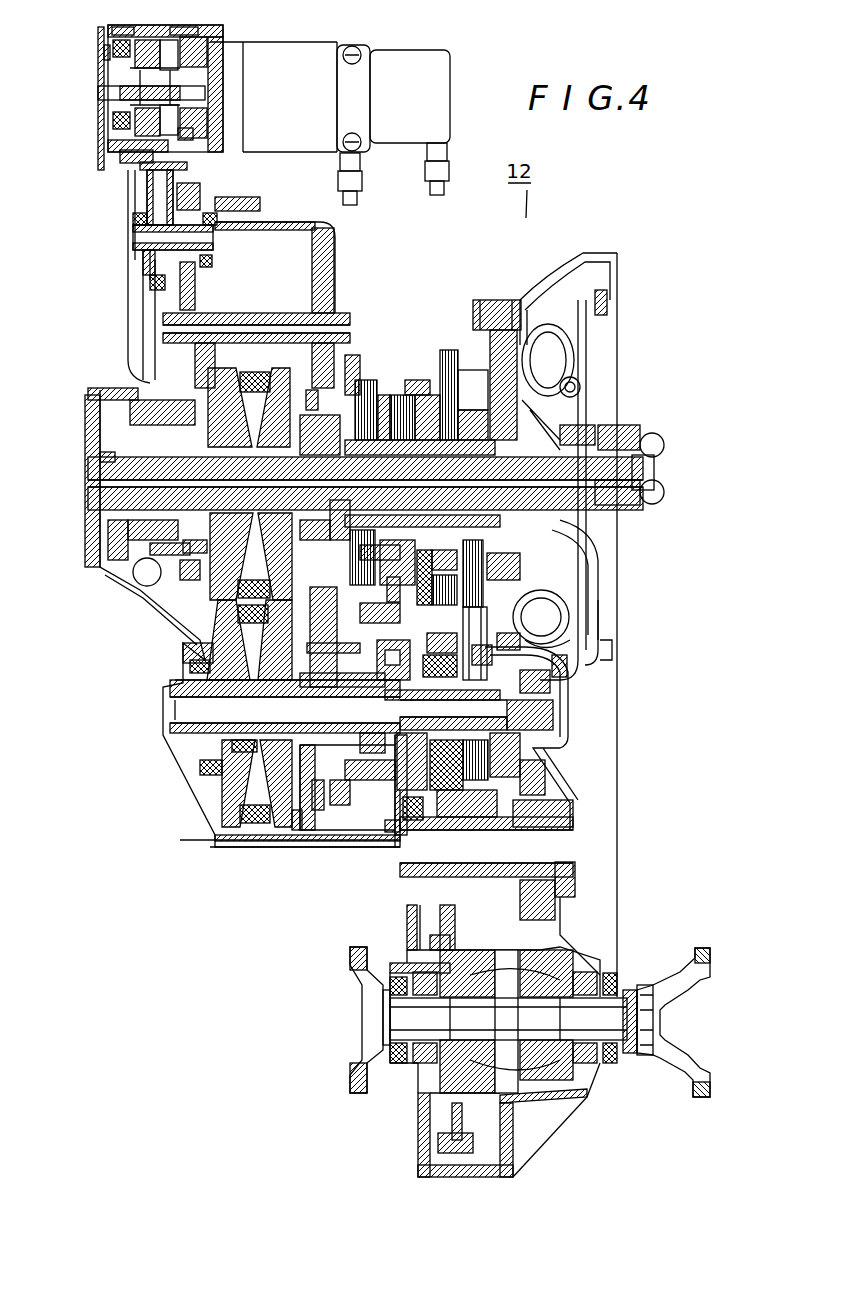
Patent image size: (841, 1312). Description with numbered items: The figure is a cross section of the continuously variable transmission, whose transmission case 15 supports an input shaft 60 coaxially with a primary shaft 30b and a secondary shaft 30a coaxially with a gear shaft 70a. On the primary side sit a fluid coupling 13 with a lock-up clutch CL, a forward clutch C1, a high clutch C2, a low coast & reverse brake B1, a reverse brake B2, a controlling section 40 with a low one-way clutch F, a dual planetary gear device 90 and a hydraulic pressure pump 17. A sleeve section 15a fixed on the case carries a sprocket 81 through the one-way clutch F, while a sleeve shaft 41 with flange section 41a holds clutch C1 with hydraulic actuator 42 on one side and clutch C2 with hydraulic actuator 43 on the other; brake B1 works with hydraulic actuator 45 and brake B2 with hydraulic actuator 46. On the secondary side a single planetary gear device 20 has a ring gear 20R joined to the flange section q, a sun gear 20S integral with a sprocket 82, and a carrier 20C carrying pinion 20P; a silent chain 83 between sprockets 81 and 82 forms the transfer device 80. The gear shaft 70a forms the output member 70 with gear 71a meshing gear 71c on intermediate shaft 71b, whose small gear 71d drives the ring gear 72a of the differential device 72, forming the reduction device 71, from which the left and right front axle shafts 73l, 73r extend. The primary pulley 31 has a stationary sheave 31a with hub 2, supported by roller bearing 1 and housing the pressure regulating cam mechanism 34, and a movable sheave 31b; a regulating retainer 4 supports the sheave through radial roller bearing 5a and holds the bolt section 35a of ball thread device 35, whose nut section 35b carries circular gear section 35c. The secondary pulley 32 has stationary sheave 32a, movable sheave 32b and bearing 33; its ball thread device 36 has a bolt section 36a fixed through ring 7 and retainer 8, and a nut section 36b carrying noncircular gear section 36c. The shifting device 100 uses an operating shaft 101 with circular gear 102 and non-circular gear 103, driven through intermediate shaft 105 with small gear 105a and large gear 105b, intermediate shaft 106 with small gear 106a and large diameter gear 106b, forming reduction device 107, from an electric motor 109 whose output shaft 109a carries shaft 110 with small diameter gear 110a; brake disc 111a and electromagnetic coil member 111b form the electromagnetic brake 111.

The roller bearing 1 is at (310, 395).
The cylinder-shaped hub 2 is at (310, 435).
The regulating retainer 4 is at (100, 430).
The radial roller bearing 5a is at (100, 458).
The ring 7 is at (360, 605).
The regulating retainer 8 is at (385, 645).
The fluid coupling 13 is at (550, 300).
The transmission case 15 is at (325, 862).
The sleeve section 15a is at (640, 500).
The hydraulic pressure pump 17 is at (570, 432).
The single planetary gear device 20 is at (487, 580).
The carrier 20C is at (397, 755).
The sun gear 20S is at (485, 800).
The ring gear 20R is at (486, 847).
The pinion 20P is at (518, 840).
The secondary shaft 30a is at (172, 702).
The primary shaft 30b is at (92, 480).
The primary pulley 31 is at (236, 380).
The stationary sheave 31a is at (300, 385).
The movable sheave 31b is at (195, 385).
The secondary pulley 32 is at (265, 828).
The stationary sheave 32a is at (238, 807).
The movable sheave 32b is at (300, 832).
The bearing 33 is at (242, 830).
The pressure regulating cam mechanism 34 is at (318, 528).
The ball thread device 35 is at (172, 556).
The bolt section 35a is at (118, 530).
The nut section 35b is at (100, 563).
The circular gear section 35c is at (195, 580).
The ball thread device 36 is at (340, 812).
The bolt section 36a is at (360, 643).
The nut section 36b is at (362, 790).
The noncircular gear section 36c is at (322, 805).
The controlling section 40 is at (480, 298).
The sleeve shaft 41 is at (337, 519).
The flange section 41a is at (415, 385).
The hydraulic actuator 42 is at (432, 605).
The hydraulic actuator 43 is at (598, 592).
The hydraulic actuator 45 is at (460, 605).
The hydraulic actuator 46 is at (352, 355).
The input shaft 60 is at (645, 448).
The output member 70 is at (572, 811).
The gear shaft 70a is at (550, 690).
The reduction device 71 is at (412, 921).
The gear 71a is at (560, 670).
The intermediate shaft 71b is at (573, 818).
The gear 71c is at (562, 893).
The small gear 71d is at (440, 915).
The differential device 72 is at (573, 952).
The ring gear 72a is at (430, 940).
The left front axle shaft 73l is at (368, 990).
The right front axle shaft 73r is at (690, 983).
The transfer device 80 is at (541, 617).
The sprocket 81 is at (592, 547).
The sprocket 82 is at (482, 655).
The silent chain 83 is at (548, 631).
The dual planetary gear device 90 is at (384, 395).
The shifting device 100 is at (147, 130).
The operating shaft 101 is at (255, 313).
The circular gear 102 is at (195, 297).
The non-circular gear 103 is at (312, 266).
The intermediate shaft 105 is at (213, 232).
The small gear 105a is at (240, 200).
The large gear 105b is at (150, 283).
The intermediate shaft 106 is at (147, 172).
The small gear 106a is at (160, 185).
The large diameter gear 106b is at (185, 140).
The reduction device 107 is at (128, 268).
The electric motor 109 is at (330, 105).
The output shaft 109a is at (215, 95).
The shaft 110 is at (108, 95).
The small diameter gear 110a is at (180, 35).
The electromagnetic brake 111 is at (98, 30).
The brake disc 111a is at (104, 50).
The electromagnetic coil member 111b is at (129, 30).
The low coast & reverse brake B1 is at (447, 350).
The reverse brake B2 is at (372, 385).
The forward clutch C1 is at (400, 400).
The high clutch C2 is at (425, 390).
The low one-way clutch F is at (473, 405).
The lock-up clutch CL is at (607, 318).
The flange section q is at (392, 832).